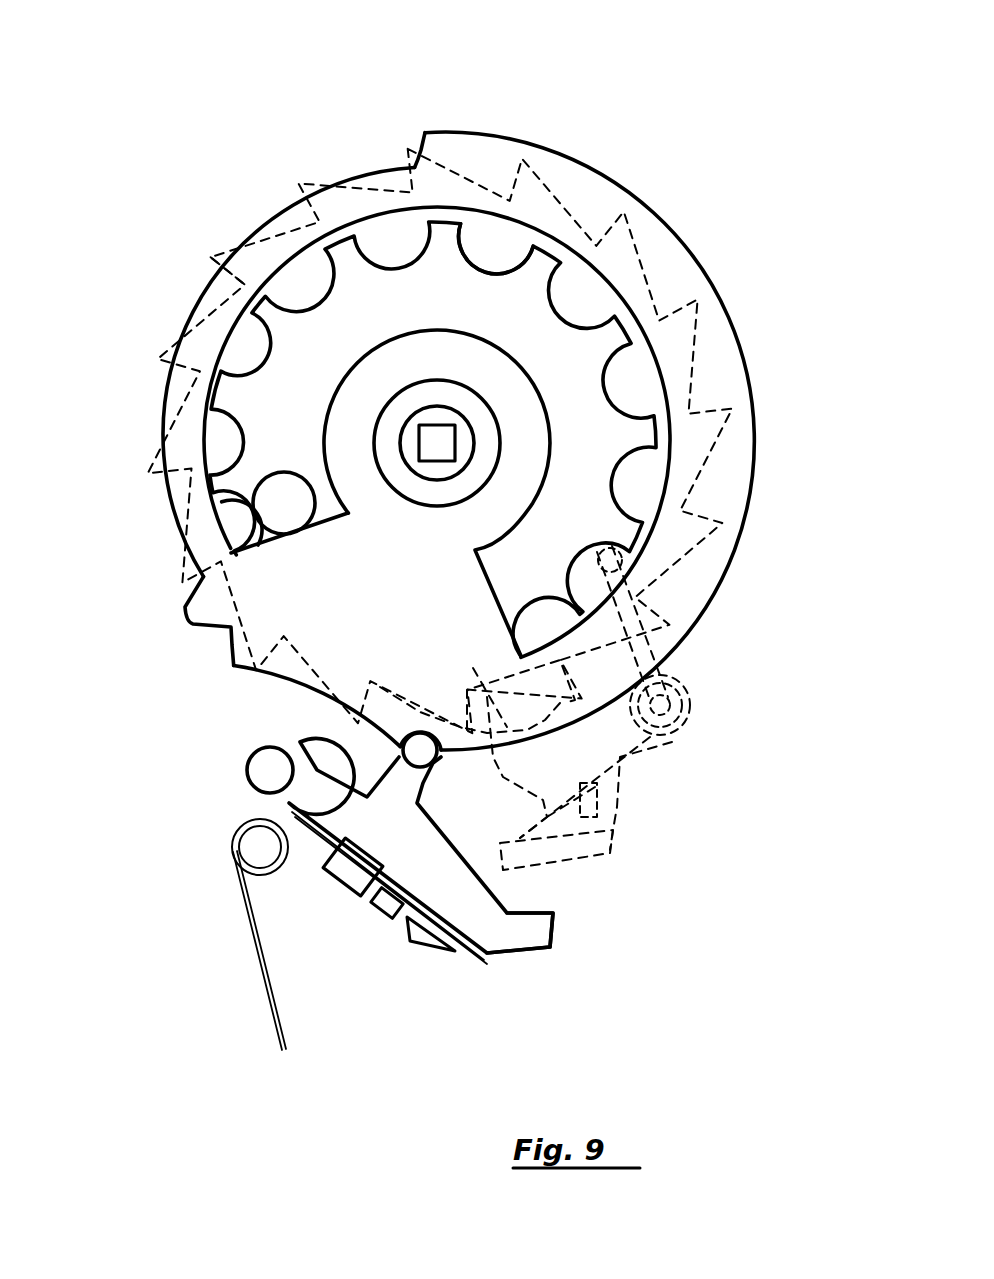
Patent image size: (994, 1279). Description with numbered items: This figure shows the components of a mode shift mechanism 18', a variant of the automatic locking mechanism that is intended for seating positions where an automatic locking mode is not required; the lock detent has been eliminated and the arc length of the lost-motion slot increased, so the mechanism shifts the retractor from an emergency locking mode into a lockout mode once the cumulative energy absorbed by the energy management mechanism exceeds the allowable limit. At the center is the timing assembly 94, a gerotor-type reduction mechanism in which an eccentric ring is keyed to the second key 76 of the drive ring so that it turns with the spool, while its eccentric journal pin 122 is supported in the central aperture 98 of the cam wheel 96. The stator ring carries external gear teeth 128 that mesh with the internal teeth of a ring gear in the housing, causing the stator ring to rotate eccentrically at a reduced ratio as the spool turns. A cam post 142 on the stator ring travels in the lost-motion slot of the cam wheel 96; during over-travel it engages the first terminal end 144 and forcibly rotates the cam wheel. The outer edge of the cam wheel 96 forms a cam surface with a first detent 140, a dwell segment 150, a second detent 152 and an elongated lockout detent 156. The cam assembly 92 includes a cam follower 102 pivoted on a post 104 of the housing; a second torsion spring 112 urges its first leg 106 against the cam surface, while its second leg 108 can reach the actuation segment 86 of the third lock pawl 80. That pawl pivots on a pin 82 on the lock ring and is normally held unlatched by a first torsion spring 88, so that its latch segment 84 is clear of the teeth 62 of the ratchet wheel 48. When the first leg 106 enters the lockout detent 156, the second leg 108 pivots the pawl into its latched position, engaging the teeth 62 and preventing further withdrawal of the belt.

The mode shift mechanism 18' is at (467, 370).
The external gear teeth 128 is at (402, 292).
The timing assembly 94 is at (490, 243).
The cam wheel 96 is at (665, 252).
The lockout detent 156 is at (166, 489).
The second detent 152 is at (232, 628).
The dwell segment 150 is at (258, 690).
The first detent 140 is at (434, 754).
The first leg 106 is at (410, 766).
The ratchet wheel 48 is at (705, 325).
The teeth 62 is at (212, 264).
The central aperture 98 is at (392, 400).
The eccentric journal pin 122 is at (455, 392).
The second key 76 is at (449, 450).
The cam post 142 is at (285, 497).
The first terminal end 144 is at (335, 514).
The latch segment 84 is at (490, 690).
The pin 82 is at (662, 706).
The first torsion spring 88 is at (657, 748).
The third lock pawl 80 is at (634, 806).
The actuation segment 86 is at (607, 855).
The post 104 is at (268, 770).
The second leg 108 is at (540, 925).
The cam follower 102 is at (515, 953).
The cam assembly 92 is at (190, 802).
The second torsion spring 112 is at (272, 985).